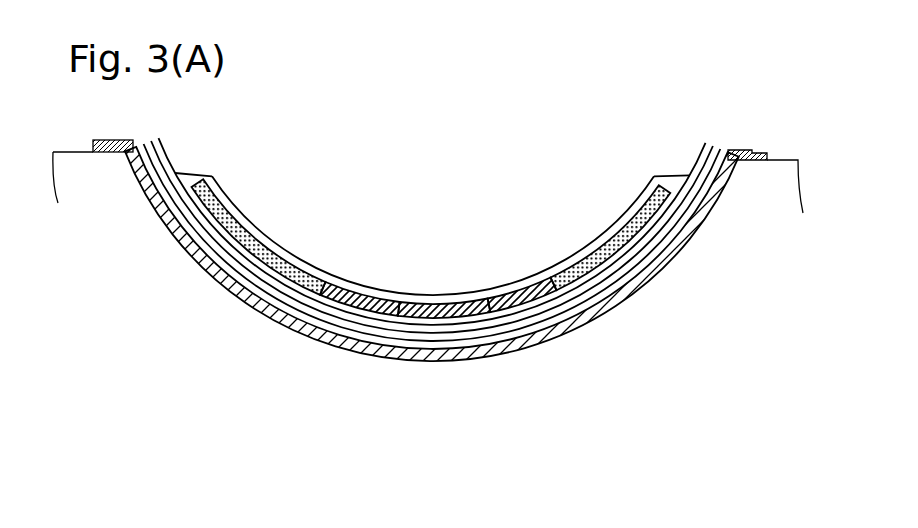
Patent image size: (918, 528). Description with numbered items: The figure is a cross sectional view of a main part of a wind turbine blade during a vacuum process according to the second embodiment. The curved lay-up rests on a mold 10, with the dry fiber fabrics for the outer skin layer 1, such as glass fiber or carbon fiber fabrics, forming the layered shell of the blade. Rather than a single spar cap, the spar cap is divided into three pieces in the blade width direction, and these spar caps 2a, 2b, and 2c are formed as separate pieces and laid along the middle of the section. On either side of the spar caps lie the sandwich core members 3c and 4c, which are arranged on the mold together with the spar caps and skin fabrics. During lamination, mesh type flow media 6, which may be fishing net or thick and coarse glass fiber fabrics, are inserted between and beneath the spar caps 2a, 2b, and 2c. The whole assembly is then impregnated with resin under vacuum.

The outer skin layer 1 is at (430, 282).
The mold 10 is at (703, 205).
The spar cap 2a is at (353, 322).
The spar cap 2b is at (448, 320).
The spar cap 2c is at (531, 302).
The sandwich core member 3c is at (207, 268).
The sandwich core member 4c is at (615, 240).
The flow media 6 is at (497, 301).